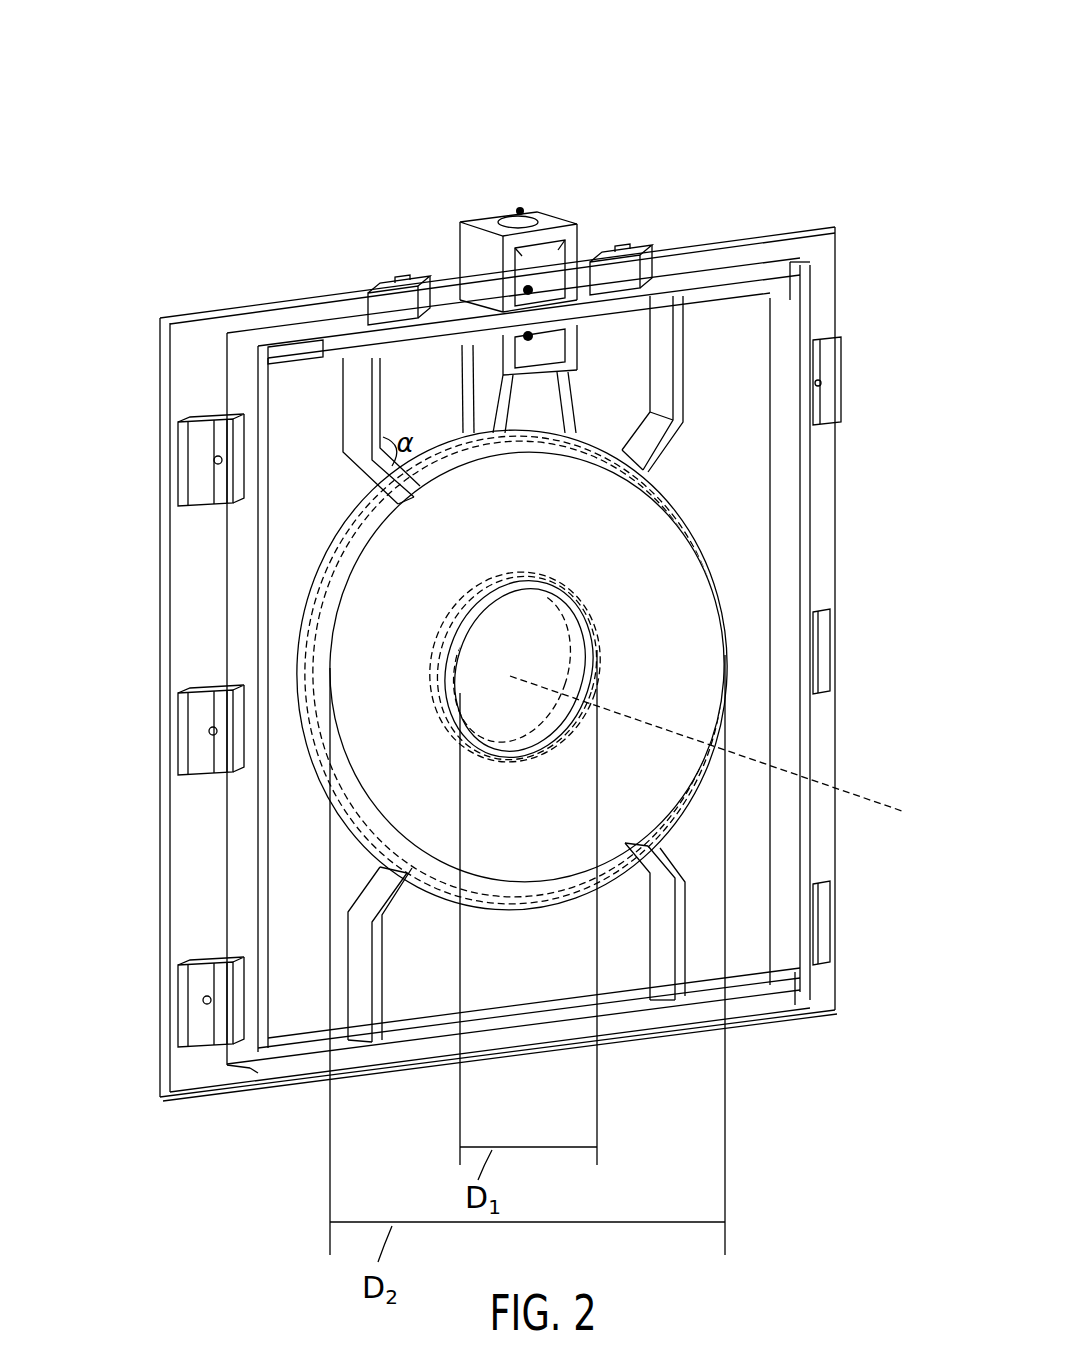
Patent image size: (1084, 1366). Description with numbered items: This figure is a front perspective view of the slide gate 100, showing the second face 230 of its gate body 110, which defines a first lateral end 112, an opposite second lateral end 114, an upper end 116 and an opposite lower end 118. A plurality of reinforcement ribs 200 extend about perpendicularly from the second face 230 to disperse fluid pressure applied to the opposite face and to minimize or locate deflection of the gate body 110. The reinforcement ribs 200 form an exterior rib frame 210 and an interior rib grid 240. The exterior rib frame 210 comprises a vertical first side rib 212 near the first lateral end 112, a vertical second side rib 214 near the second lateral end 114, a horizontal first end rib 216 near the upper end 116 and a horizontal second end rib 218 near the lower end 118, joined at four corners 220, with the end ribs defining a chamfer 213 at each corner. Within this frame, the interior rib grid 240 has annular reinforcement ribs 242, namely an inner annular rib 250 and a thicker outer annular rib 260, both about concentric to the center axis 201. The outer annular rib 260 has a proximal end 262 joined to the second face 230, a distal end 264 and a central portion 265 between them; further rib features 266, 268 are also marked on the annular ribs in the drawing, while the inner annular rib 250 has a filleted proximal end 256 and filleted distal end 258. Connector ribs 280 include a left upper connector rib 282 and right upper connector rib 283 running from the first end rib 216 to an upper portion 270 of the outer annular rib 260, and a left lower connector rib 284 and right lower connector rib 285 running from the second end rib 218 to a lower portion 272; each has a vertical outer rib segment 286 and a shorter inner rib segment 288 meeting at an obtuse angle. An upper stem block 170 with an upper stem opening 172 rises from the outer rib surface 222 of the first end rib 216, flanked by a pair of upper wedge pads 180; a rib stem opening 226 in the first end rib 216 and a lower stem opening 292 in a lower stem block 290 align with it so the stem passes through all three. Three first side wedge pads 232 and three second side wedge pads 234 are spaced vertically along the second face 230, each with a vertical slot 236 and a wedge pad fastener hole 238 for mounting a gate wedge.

The slide gate 100 is at (800, 72).
The gate body 110 is at (519, 626).
The first lateral end 112 is at (165, 518).
The second lateral end 114 is at (835, 848).
The upper end 116 is at (765, 238).
The lower end 118 is at (790, 1020).
The upper stem block 170 is at (522, 266).
The upper stem opening 172 is at (519, 212).
The upper wedge pads 180 is at (410, 302).
The reinforcement ribs 200 is at (480, 670).
The center axis 201 is at (160, 552).
The exterior rib frame 210 is at (479, 671).
The first side rib 212 is at (228, 795).
The chamfer 213 is at (312, 362).
The second side rib 214 is at (795, 733).
The first end rib 216 is at (335, 325).
The second end rib 218 is at (300, 1050).
The corners 220 is at (285, 350).
The outer rib surface 222 is at (700, 270).
The rib stem opening 226 is at (530, 300).
The second face 230 is at (745, 480).
The first side wedge pads 232 is at (171, 785).
The second side wedge pads 234 is at (838, 385).
The vertical slot 236 is at (215, 757).
The wedge pad fastener hole 238 is at (215, 1035).
The interior rib grid 240 is at (660, 932).
The annular reinforcement ribs 242 is at (612, 633).
The inner annular rib 250 is at (491, 644).
The filleted proximal end 256 is at (435, 700).
The filleted distal end 258 is at (462, 665).
The outer annular rib 260 is at (680, 770).
The proximal end 262 is at (310, 570).
The distal end 264 is at (395, 530).
The central portion 265 is at (335, 480).
The rim surface 266 is at (300, 612).
The rim ring 268 is at (350, 580).
The upper portion 270 is at (470, 430).
The lower portion 272 is at (350, 832).
The connector ribs 280 is at (485, 718).
The left upper connector rib 282 is at (345, 368).
The right upper connector rib 283 is at (673, 384).
The left lower connector rib 284 is at (355, 962).
The right lower connector rib 285 is at (660, 990).
The outer rib segment 286 is at (355, 415).
The inner rib segment 288 is at (355, 478).
The lower stem block 290 is at (492, 348).
The lower stem opening 292 is at (615, 262).